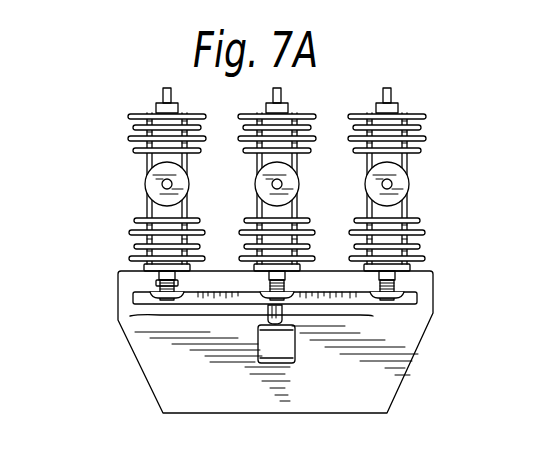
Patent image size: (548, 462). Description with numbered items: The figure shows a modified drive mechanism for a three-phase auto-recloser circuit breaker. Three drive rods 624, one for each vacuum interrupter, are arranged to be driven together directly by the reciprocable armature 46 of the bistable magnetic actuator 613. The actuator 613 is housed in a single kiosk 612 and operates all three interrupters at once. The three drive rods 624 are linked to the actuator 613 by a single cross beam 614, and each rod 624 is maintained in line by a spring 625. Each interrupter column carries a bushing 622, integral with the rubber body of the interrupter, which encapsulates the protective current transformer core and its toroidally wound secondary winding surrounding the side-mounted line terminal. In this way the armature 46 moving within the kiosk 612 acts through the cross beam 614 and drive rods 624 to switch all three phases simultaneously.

The reciprocable armature 46 is at (125, 318).
The kiosk 612 is at (133, 179).
The bistable magnetic actuator 613 is at (288, 347).
The cross beam 614 is at (348, 305).
The bushing 622 is at (142, 185).
The drive rods 624 is at (150, 272).
The spring 625 is at (138, 284).